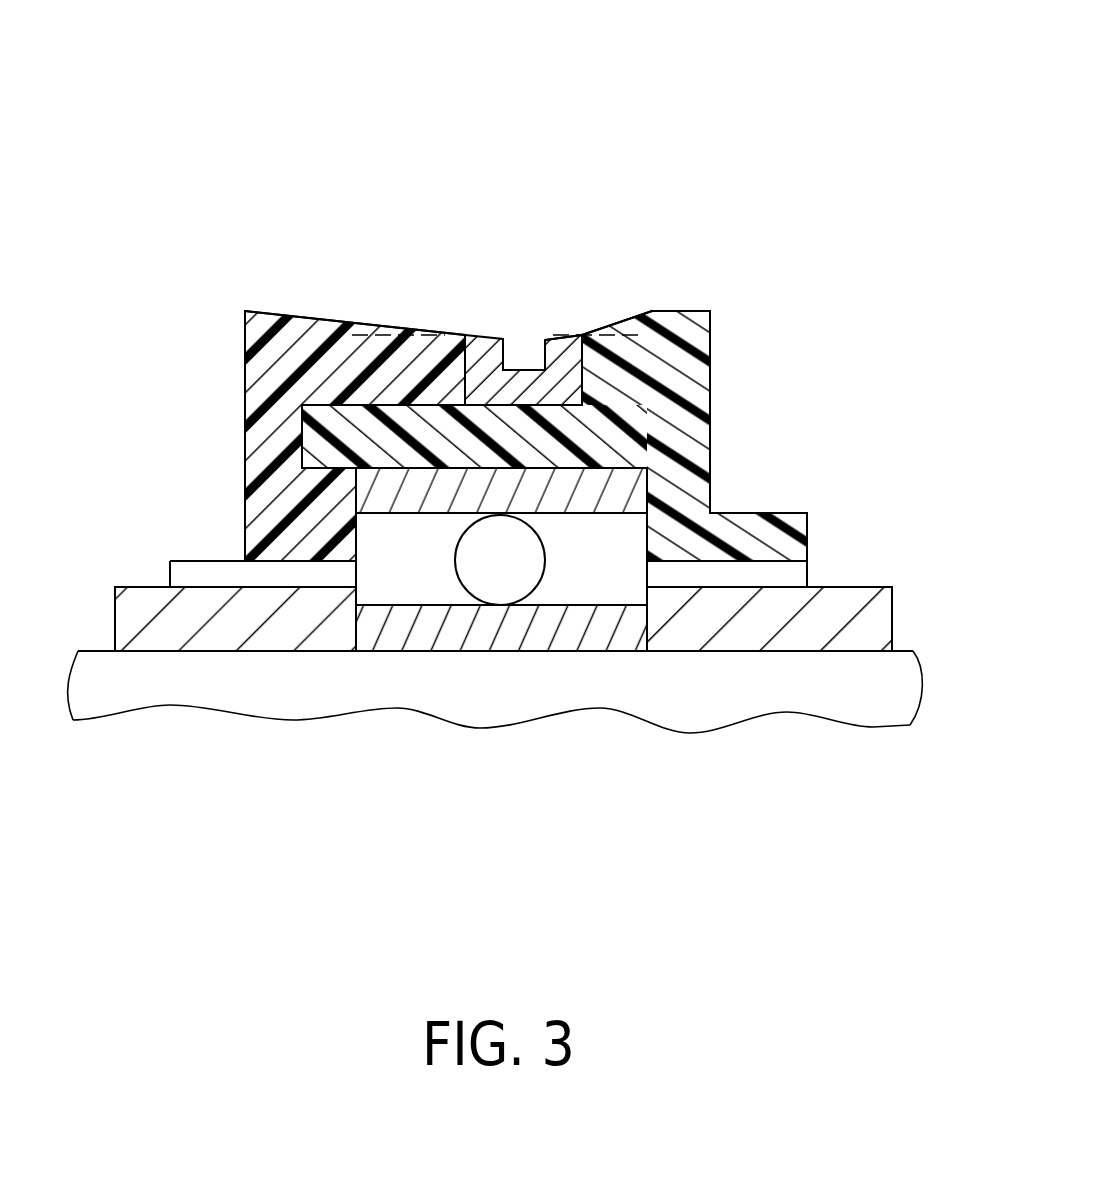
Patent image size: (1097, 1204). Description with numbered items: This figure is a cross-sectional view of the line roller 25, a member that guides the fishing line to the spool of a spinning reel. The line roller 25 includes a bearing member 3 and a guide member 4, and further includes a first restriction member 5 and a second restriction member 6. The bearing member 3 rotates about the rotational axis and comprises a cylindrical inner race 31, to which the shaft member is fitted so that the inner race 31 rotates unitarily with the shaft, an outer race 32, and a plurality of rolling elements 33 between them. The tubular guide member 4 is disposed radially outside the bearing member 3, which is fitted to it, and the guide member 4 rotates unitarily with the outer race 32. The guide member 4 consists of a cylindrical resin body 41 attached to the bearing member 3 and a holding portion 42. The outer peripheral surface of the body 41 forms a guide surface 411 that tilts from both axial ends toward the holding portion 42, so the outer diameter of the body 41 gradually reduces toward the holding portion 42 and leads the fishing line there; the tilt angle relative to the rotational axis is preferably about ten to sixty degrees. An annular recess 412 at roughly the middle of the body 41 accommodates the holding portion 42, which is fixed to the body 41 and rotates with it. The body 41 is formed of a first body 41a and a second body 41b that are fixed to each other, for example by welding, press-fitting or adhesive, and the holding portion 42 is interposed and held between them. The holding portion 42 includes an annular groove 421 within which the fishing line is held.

The line roller 25 is at (767, 128).
The bearing member 3 is at (522, 665).
The inner race 31 is at (392, 633).
The outer race 32 is at (501, 657).
The rolling elements 33 is at (495, 566).
The guide member 4 is at (475, 325).
The body 41 is at (305, 310).
The guide surface 411 is at (415, 337).
The recess 412 is at (560, 338).
The first body 41a is at (710, 350).
The second body 41b is at (260, 362).
The holding portion 42 is at (547, 335).
The annular groove 421 is at (515, 338).
The first restriction member 5 is at (800, 640).
The second restriction member 6 is at (218, 635).